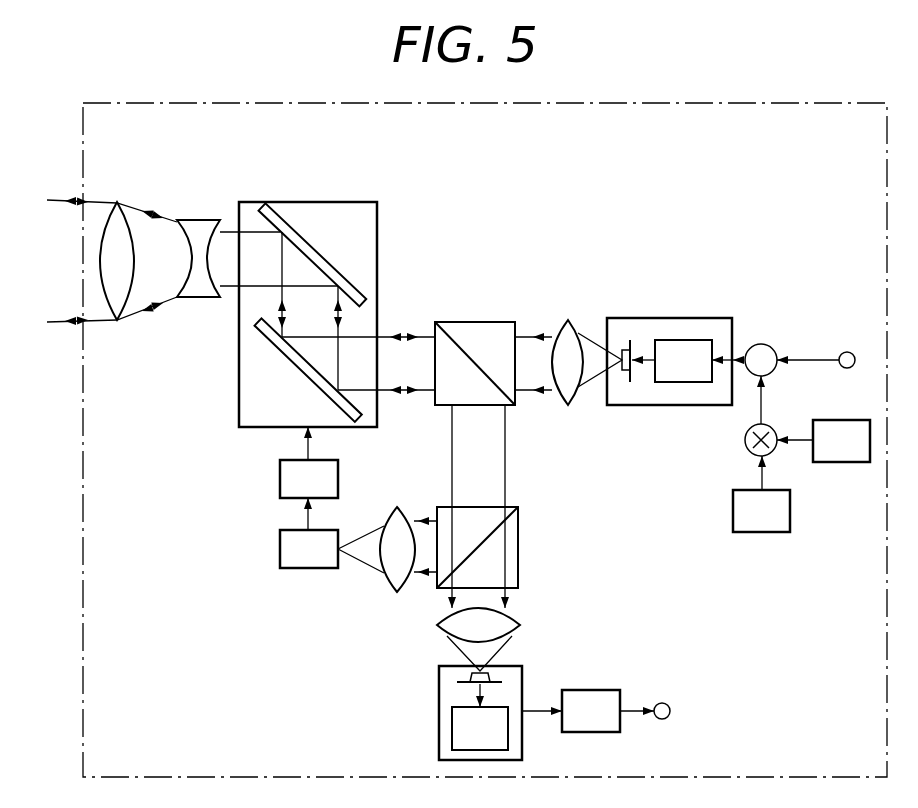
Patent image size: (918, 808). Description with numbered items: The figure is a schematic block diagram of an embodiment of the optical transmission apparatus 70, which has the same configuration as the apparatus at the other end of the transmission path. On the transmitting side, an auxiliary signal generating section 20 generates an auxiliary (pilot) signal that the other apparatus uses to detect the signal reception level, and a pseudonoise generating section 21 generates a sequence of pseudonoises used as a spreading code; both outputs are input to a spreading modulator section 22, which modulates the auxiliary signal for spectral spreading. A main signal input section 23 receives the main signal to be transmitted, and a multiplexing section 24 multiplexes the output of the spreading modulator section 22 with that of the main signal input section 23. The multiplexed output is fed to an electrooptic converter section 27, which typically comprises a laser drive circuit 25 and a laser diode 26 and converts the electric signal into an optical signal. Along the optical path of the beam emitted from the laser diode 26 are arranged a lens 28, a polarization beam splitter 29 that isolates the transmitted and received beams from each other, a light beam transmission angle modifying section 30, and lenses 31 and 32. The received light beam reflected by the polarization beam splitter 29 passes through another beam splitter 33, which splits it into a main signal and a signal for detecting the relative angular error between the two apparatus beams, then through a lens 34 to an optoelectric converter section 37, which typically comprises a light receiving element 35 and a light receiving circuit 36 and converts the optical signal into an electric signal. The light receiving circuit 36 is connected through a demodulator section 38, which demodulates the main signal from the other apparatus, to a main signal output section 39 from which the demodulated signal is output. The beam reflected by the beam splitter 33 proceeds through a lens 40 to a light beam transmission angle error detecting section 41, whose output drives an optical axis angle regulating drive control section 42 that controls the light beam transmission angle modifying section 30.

The auxiliary signal generating section 20 is at (733, 508).
The pseudonoise generating section 21 is at (840, 462).
The spreading modulator section 22 is at (745, 442).
The main signal input section 23 is at (847, 352).
The multiplexing section 24 is at (762, 344).
The laser drive circuit 25 is at (668, 340).
The laser diode 26 is at (630, 340).
The electrooptic converter section 27 is at (713, 318).
The lens 28 is at (570, 320).
The polarization beam splitter 29 is at (475, 322).
The light beam transmission angle modifying section 30 is at (377, 215).
The lens 31 is at (195, 220).
The lens 32 is at (124, 208).
The beam splitter 33 is at (518, 530).
The lens 34 is at (516, 620).
The light receiving element 35 is at (500, 680).
The light receiving circuit 36 is at (452, 730).
The optoelectric converter section 37 is at (439, 685).
The demodulator section 38 is at (600, 690).
The main signal output section 39 is at (670, 711).
The lens 40 is at (397, 507).
The light beam transmission angle error detecting section 41 is at (280, 548).
The optical axis angle regulating drive control section 42 is at (280, 480).
The optical transmission apparatus 70 is at (608, 103).